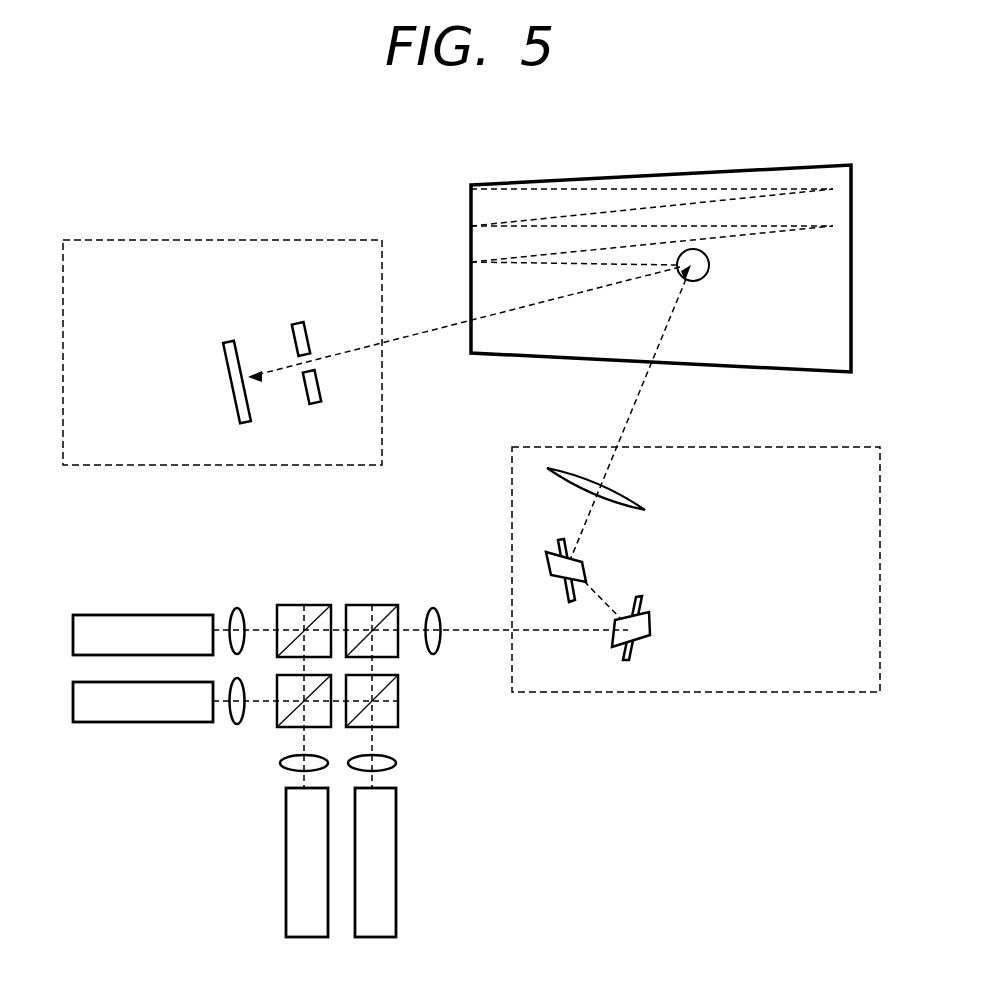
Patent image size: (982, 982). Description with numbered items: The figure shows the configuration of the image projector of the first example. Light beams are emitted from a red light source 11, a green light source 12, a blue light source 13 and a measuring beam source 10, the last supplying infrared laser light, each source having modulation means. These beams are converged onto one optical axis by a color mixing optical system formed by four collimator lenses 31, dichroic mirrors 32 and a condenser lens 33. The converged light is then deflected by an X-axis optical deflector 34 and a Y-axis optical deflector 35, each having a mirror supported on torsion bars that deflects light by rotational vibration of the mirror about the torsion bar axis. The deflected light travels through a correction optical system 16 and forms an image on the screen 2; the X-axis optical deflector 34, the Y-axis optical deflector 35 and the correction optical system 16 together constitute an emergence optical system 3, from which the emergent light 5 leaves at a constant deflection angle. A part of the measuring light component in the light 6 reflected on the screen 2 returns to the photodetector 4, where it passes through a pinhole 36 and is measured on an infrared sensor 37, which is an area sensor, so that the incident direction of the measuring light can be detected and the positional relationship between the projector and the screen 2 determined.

The screen 2 is at (641, 176).
The emergence optical system 3 is at (825, 692).
The photodetector 4 is at (152, 240).
The emergent light 5 is at (645, 382).
The light reflected on the screen 6 is at (417, 335).
The measuring beam source 10 is at (397, 900).
The red light source 11 is at (107, 615).
The green light source 12 is at (107, 722).
The blue light source 13 is at (285, 900).
The correction optical system 16 is at (643, 510).
The collimator lens 31 is at (234, 612).
The dichroic mirror 32 is at (297, 605).
The condenser lens 33 is at (434, 608).
The X-axis optical deflector 34 is at (652, 620).
The Y-axis optical deflector 35 is at (586, 572).
The pinhole 36 is at (305, 332).
The infrared sensor 37 is at (228, 370).